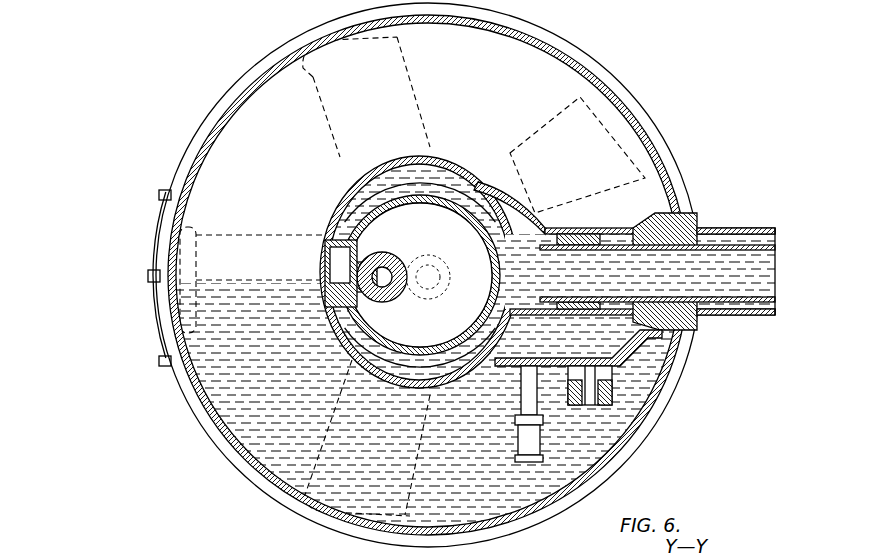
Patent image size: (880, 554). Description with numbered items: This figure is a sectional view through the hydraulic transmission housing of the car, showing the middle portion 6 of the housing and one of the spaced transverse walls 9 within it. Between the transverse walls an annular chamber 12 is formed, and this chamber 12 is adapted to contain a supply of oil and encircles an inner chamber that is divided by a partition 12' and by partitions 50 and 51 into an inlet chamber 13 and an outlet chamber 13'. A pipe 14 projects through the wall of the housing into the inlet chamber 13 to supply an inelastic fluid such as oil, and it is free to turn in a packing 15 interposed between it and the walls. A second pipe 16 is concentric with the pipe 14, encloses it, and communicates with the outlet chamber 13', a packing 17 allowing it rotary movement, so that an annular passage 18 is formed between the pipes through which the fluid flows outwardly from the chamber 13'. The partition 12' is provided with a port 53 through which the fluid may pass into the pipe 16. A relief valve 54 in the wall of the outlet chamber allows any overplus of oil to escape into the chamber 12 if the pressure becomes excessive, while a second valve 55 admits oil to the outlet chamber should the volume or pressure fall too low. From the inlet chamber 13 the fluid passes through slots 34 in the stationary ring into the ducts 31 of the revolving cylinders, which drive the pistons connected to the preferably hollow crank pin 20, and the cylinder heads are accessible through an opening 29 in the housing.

The middle portion 6 is at (207, 135).
The transverse wall 9 is at (532, 90).
The annular chamber 12 is at (428, 282).
The partition 12' is at (420, 275).
The inlet chamber 13 is at (547, 220).
The outlet chamber 13' is at (440, 390).
The pipe 14 is at (697, 252).
The packing 15 is at (568, 238).
The second pipe 16 is at (743, 230).
The packing 17 is at (673, 210).
The annular passage 18 is at (767, 228).
The crank pin 20 is at (388, 253).
The opening 29 is at (160, 220).
The duct 31 is at (430, 160).
The slot 34 is at (453, 187).
The partition 50 is at (337, 242).
The partition 51 is at (327, 303).
The port 53 is at (670, 332).
The relief valve 54 is at (610, 378).
The second valve 55 is at (543, 443).